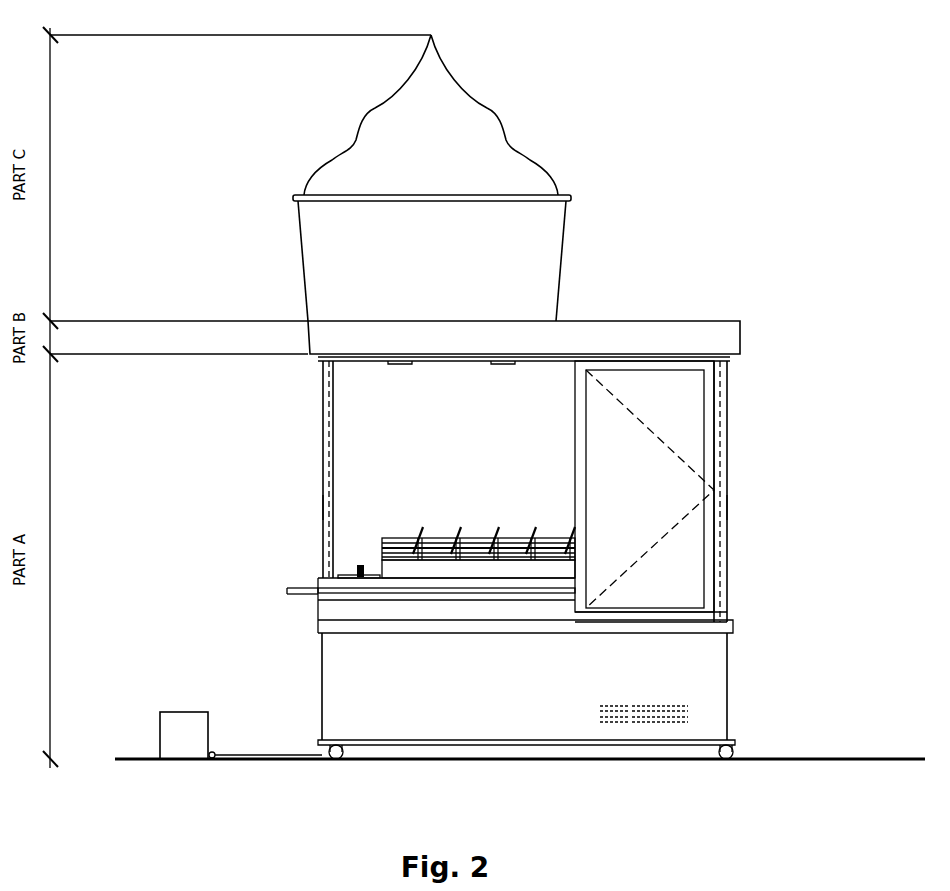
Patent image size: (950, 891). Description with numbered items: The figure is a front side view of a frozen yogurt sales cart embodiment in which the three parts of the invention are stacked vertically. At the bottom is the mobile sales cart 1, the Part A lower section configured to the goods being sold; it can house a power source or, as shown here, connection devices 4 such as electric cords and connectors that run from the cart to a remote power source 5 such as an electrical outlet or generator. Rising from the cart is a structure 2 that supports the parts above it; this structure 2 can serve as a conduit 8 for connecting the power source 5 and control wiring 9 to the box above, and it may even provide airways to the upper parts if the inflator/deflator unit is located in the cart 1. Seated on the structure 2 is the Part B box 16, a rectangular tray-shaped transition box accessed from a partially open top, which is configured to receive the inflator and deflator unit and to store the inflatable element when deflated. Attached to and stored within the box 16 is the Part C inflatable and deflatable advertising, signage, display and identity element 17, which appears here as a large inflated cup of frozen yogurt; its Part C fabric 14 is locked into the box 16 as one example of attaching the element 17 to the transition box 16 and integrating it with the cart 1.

The mobile sales cart 1 is at (511, 558).
The structure 2 is at (523, 490).
The connection devices 4 is at (268, 737).
The remote power source 5 is at (166, 716).
The conduit 8 is at (523, 498).
The control wiring 9 is at (523, 491).
The Part C fabric 14 is at (385, 115).
The Part B box 16 is at (476, 307).
The inflatable and deflatable advertising/signage/display/identity element 17 is at (432, 224).